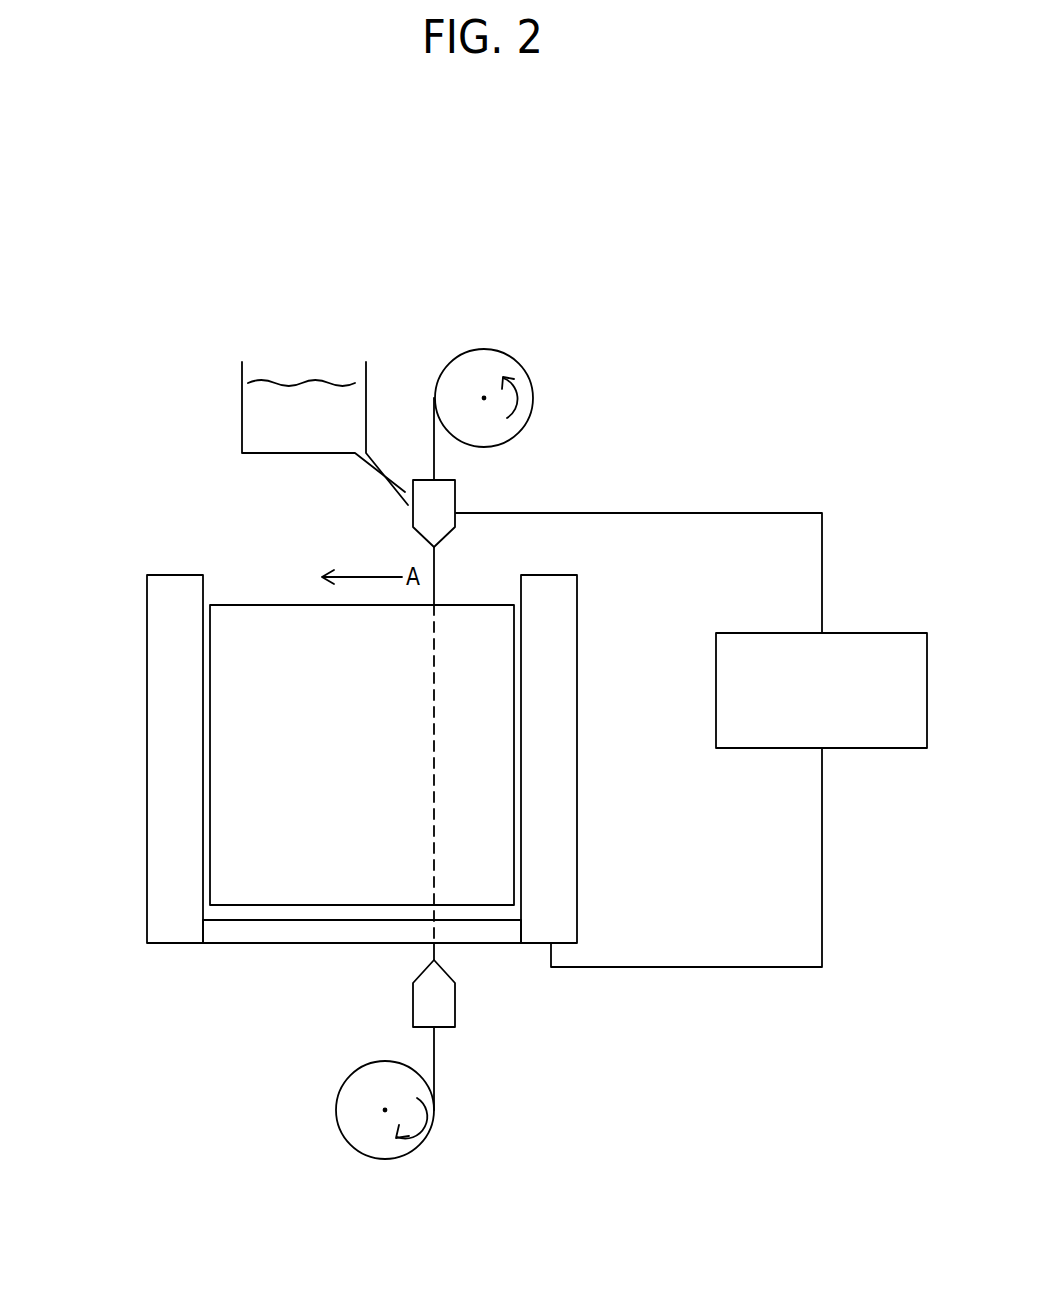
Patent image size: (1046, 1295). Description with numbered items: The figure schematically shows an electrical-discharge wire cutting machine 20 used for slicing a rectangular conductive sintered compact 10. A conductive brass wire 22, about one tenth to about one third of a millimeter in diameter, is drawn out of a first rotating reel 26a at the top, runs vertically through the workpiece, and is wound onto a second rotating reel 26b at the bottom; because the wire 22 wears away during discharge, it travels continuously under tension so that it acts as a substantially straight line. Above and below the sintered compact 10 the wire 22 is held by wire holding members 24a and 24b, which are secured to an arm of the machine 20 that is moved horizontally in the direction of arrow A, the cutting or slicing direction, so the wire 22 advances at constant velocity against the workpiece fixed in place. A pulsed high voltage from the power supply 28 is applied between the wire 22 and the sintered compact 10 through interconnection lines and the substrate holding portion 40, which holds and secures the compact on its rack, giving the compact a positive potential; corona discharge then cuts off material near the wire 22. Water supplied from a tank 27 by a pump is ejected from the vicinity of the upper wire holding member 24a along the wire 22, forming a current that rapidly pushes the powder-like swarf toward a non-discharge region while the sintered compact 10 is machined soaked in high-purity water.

The conductive sintered compact 10 is at (263, 603).
The electrical-discharge wire cutting machine 20 is at (699, 359).
The wire 22 is at (436, 578).
The wire holding member 24a is at (456, 500).
The wire holding member 24b is at (456, 996).
The first rotating reel 26a is at (516, 361).
The second rotating reel 26b is at (336, 1118).
The tank 27 is at (366, 407).
The power supply 28 is at (874, 749).
The substrate holding portion 40 is at (147, 708).